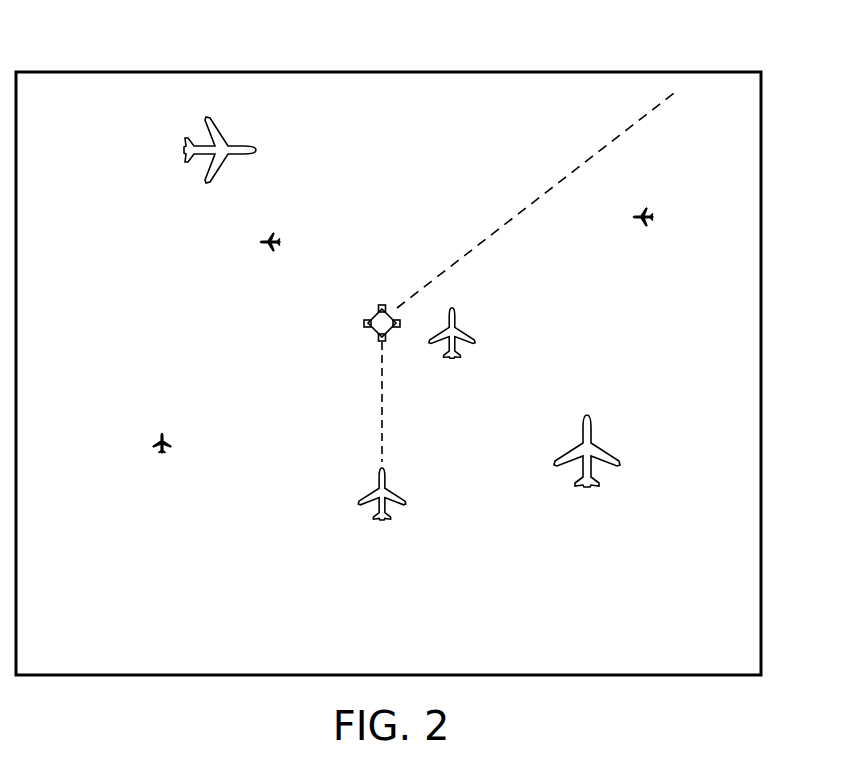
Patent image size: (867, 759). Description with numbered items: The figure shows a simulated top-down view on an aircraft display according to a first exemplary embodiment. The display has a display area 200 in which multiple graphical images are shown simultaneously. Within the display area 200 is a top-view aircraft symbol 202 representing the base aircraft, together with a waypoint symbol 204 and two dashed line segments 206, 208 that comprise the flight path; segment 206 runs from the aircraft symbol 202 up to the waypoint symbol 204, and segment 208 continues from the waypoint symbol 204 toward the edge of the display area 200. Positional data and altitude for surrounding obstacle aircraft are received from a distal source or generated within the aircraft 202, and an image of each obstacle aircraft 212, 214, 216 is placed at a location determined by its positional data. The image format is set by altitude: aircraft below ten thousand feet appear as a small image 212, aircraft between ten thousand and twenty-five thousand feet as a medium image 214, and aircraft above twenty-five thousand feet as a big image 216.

The display area 200 is at (178, 72).
The top-view aircraft symbol 202 is at (372, 508).
The waypoint symbol 204 is at (372, 330).
The line segment 206 is at (380, 432).
The line segment 208 is at (527, 209).
The small image of obstacle aircraft 212 is at (277, 238).
The medium image of obstacle aircraft 214 is at (463, 325).
The big image of obstacle aircraft 216 is at (200, 164).